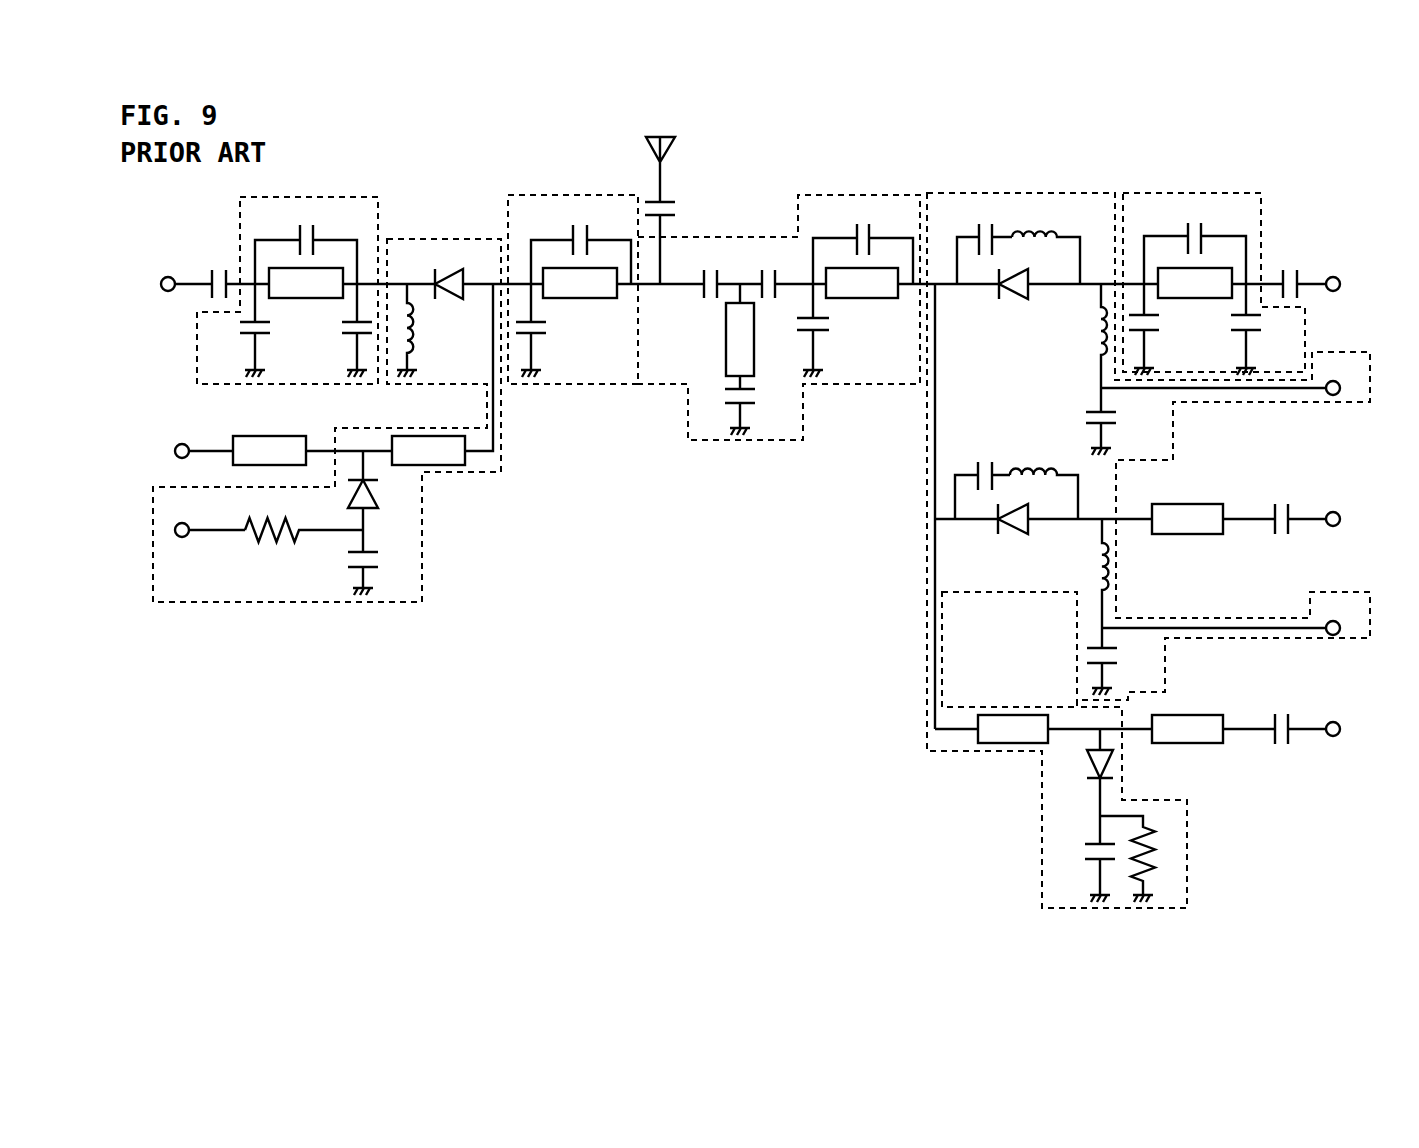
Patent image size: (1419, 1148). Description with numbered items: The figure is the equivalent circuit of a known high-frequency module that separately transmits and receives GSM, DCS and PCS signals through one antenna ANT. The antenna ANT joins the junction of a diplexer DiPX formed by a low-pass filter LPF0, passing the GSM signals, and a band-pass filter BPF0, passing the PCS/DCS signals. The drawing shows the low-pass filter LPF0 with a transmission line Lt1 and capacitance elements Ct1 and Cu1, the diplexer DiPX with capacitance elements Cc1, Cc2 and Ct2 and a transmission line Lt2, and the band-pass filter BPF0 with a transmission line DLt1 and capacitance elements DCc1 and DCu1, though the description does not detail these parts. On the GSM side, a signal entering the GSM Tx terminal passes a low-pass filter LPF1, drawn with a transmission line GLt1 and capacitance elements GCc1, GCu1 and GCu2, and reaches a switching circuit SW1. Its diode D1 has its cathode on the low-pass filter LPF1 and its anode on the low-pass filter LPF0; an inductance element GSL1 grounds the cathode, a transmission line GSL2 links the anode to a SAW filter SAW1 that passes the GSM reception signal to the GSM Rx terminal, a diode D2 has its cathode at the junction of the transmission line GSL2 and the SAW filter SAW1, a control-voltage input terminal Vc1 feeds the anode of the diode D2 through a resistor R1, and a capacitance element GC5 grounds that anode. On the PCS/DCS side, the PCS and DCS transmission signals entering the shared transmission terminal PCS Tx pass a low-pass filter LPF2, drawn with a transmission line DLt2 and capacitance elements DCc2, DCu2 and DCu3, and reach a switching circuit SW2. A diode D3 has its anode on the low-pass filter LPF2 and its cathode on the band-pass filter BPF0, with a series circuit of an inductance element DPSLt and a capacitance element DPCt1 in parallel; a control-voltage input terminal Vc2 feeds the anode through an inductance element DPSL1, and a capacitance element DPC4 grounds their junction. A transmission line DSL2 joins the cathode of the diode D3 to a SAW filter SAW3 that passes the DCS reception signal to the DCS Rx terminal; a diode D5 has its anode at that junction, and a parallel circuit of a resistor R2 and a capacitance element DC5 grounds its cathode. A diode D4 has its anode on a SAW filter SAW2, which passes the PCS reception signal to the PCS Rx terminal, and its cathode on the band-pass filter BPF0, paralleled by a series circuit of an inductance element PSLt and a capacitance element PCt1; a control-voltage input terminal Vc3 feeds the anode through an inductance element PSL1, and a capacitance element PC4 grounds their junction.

The low-pass filter LPF1 is at (357, 195).
The capacitor GCc1 is at (306, 242).
The transmission line GLt1 is at (306, 283).
The capacitor GCu1 is at (234, 330).
The capacitor GCu2 is at (336, 330).
The switching circuit SW1 is at (475, 238).
The diode D1 is at (449, 270).
The inductance element GSL1 is at (432, 330).
The transmission line GSL2 is at (428, 450).
The low-pass filter LPF0 is at (540, 194).
The capacitor Ct1 is at (581, 242).
The transmission line Lt1 is at (580, 283).
The capacitor Cu1 is at (546, 330).
The antenna ANT is at (676, 198).
The diplexer DiPX is at (637, 403).
The capacitor Cc1 is at (708, 270).
The capacitor Cc2 is at (767, 270).
The transmission line Lt2 is at (740, 330).
The capacitor Ct2 is at (758, 405).
The band-pass filter BPF0 is at (895, 194).
The capacitor DCc1 is at (863, 240).
The transmission line DLt1 is at (862, 283).
The capacitor DCu1 is at (831, 330).
The switching circuit SW2 is at (1097, 194).
The capacitance element DPCt1 is at (977, 241).
The inductance element DPSLt is at (1046, 241).
The diode D3 is at (1013, 295).
The inductance element DPSL1 is at (1070, 348).
The capacitance element DPC4 is at (1127, 433).
The low-pass filter LPF2 is at (1243, 194).
The capacitor DCc2 is at (1195, 240).
The transmission line DLt2 is at (1195, 283).
The capacitor DCu2 is at (1164, 329).
The capacitor DCu3 is at (1266, 329).
The SAW filter SAW1 is at (269, 450).
The diode D2 is at (376, 490).
The resistor R1 is at (304, 515).
The capacitance element GC5 is at (384, 562).
The capacitance element PCt1 is at (979, 477).
The inductance element PSLt is at (1044, 477).
The diode D4 is at (1013, 531).
The inductance element PSL1 is at (1074, 583).
The capacitance element PC4 is at (1124, 671).
The SAW filter SAW2 is at (1187, 519).
The transmission line DSL2 is at (1013, 729).
The SAW filter SAW3 is at (1187, 729).
The diode D5 is at (1086, 772).
The capacitance element DC5 is at (1079, 859).
The resistor R2 is at (1142, 859).
The GSM Tx terminal GSM Tx is at (178, 275).
The GSM Rx terminal GSM Rx is at (167, 438).
The control-voltage input terminal Vc1 is at (200, 517).
The control-voltage input terminal Vc2 is at (1233, 375).
The control-voltage input terminal Vc3 is at (1234, 614).
The PCS/DCS Tx terminal PCS Tx is at (1336, 261).
The PCS Rx terminal PCS Rx is at (1338, 509).
The DCS Rx terminal DCS Rx is at (1338, 719).